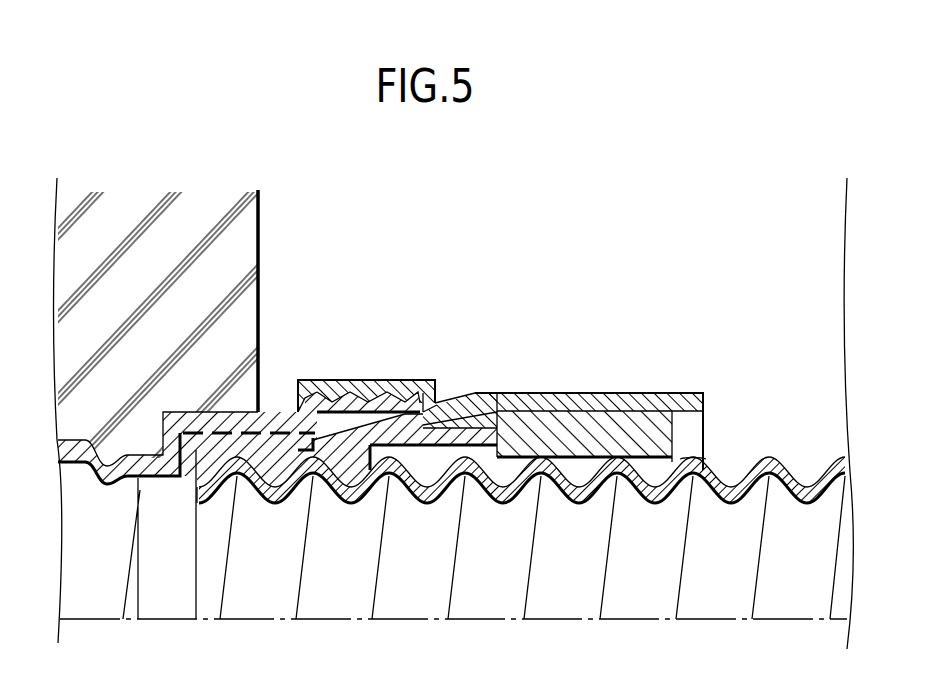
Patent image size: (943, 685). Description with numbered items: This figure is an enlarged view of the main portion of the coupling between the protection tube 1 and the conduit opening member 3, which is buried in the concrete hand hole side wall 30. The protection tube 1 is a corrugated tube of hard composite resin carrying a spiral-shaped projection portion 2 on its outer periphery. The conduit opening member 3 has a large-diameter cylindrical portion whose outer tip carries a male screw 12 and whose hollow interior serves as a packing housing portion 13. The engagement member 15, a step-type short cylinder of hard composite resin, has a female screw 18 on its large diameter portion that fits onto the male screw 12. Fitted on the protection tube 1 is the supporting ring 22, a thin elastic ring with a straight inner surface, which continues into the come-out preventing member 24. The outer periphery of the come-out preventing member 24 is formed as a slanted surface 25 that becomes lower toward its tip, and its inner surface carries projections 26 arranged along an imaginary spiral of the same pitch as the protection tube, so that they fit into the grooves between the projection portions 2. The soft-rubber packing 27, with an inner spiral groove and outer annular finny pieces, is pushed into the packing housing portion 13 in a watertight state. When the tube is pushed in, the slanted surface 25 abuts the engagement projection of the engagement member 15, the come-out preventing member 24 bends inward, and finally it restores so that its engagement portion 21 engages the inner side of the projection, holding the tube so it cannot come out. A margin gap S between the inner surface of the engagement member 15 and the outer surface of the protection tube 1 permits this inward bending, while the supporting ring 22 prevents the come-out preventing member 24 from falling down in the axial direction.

The protection tube 1 is at (779, 452).
The spiral-shaped projection portion 2 is at (702, 468).
The conduit opening member 3 is at (150, 386).
The male screw 12 is at (336, 393).
The packing housing portion 13 is at (192, 470).
The engagement member 15 is at (567, 386).
The female screw 18 is at (300, 401).
The engagement portion 21 is at (447, 400).
The supporting ring 22 is at (643, 412).
The come-out preventing member 24 is at (402, 393).
The slanted surface 25 is at (371, 400).
The projection 26 is at (345, 498).
The packing 27 is at (270, 497).
The hand hole side wall 30 is at (259, 268).
The margin gap S is at (421, 497).